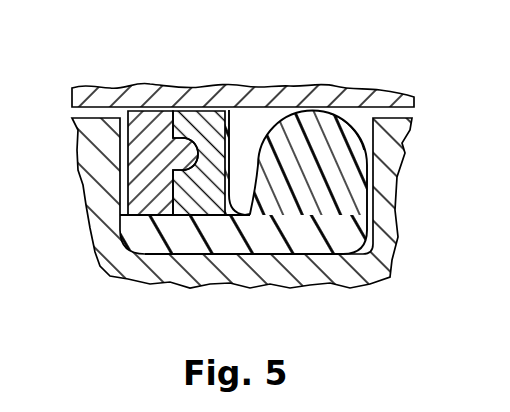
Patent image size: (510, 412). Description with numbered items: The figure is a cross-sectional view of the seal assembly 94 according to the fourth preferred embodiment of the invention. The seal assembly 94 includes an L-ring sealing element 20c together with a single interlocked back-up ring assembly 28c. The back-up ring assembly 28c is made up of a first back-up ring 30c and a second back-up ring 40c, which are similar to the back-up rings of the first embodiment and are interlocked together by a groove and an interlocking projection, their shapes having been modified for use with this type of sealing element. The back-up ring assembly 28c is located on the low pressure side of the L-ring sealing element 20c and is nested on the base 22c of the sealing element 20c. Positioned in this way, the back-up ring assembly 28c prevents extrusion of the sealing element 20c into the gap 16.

The gap 16 is at (417, 113).
The back-up ring assembly 28c is at (115, 100).
The first back-up ring 30c is at (228, 138).
The second back-up ring 40c is at (140, 168).
The seal assembly 94 is at (364, 98).
The L-ring sealing element 20c is at (330, 200).
The base 22c is at (185, 237).